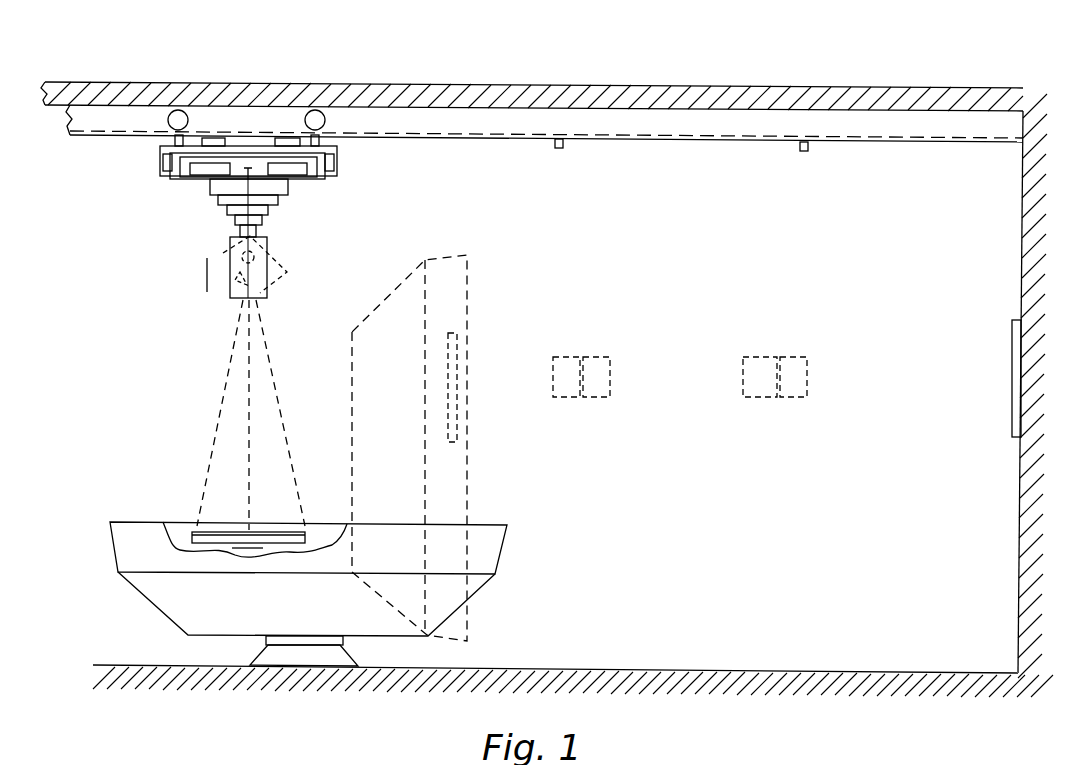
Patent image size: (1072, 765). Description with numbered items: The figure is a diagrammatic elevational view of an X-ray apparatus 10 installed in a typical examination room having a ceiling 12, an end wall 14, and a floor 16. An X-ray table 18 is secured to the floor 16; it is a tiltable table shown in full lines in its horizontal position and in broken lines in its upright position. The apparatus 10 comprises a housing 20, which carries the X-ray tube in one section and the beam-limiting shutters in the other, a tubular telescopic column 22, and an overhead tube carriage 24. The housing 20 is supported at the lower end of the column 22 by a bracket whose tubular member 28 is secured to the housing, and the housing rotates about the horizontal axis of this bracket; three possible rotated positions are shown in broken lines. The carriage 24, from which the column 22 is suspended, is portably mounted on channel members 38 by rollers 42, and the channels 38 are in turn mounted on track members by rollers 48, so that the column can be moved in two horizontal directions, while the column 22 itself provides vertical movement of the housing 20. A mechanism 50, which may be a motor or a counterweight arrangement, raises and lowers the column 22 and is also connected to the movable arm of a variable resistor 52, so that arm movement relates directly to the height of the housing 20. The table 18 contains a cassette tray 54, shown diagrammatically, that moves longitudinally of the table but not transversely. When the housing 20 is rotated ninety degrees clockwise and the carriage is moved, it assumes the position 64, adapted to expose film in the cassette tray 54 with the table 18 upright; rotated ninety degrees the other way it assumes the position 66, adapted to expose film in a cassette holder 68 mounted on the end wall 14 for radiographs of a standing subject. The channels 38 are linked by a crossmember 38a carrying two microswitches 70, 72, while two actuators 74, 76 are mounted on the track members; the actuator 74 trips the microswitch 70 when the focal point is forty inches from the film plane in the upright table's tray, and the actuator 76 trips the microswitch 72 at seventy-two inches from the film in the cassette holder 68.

The X-ray apparatus 10 is at (544, 281).
The ceiling 12 is at (474, 104).
The end wall 14 is at (1022, 258).
The floor 16 is at (588, 668).
The X-ray table 18 is at (442, 260).
The housing 20 is at (283, 242).
The tubular telescopic column 22 is at (218, 207).
The overhead tube carriage 24 is at (259, 129).
The hollow tubular member 28 is at (228, 248).
The channel members 38 is at (338, 157).
The crossmember 38a is at (243, 146).
The rollers 42 is at (163, 160).
The rollers 48 is at (167, 126).
The mechanism 50 is at (297, 174).
The variable resistor 52 is at (200, 175).
The cassette tray 54 is at (203, 528).
The housing position 64 is at (583, 347).
The housing position 66 is at (778, 347).
The cassette holder 68 is at (1012, 322).
The microswitch 70 is at (213, 137).
The microswitch 72 is at (284, 137).
The actuator 74 is at (570, 144).
The actuator 76 is at (812, 149).